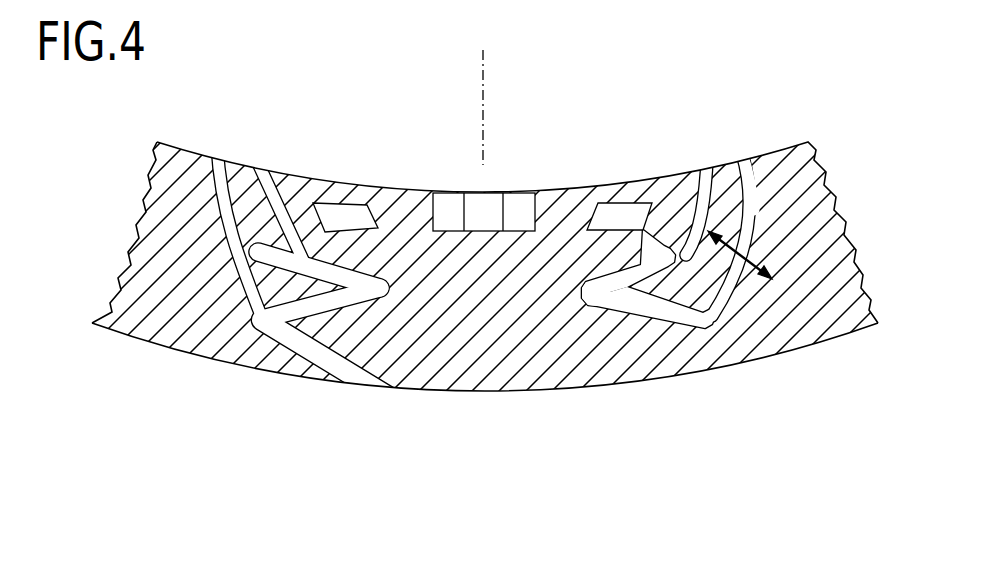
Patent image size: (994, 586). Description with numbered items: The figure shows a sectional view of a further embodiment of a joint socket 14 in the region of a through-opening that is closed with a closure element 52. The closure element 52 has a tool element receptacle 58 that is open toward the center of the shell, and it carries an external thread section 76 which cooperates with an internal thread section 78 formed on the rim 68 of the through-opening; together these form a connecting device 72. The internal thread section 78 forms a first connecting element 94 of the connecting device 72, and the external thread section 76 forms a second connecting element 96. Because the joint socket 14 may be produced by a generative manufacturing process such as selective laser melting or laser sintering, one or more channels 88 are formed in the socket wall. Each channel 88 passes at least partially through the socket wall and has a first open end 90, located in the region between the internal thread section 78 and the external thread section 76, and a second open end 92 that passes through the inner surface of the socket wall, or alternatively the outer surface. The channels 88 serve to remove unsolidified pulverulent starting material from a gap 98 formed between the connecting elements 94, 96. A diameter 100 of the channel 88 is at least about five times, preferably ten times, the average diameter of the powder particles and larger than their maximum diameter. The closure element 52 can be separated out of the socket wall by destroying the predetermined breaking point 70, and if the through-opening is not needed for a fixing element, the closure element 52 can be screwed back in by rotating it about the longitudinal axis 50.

The joint socket 14 is at (580, 90).
The longitudinal axis 50 is at (487, 72).
The closure element 52 is at (481, 368).
The tool element receptacle 58 is at (450, 207).
The rim 68 is at (300, 352).
The predetermined breaking point 70 is at (343, 192).
The connecting device 72 is at (625, 384).
The external thread section 76 is at (653, 330).
The internal thread section 78 is at (286, 308).
The channel 88 is at (216, 167).
The first open end 90 is at (702, 312).
The second open end 92 is at (750, 160).
The first connecting element 94 is at (330, 288).
The second connecting element 96 is at (313, 254).
The gap 98 is at (690, 253).
The diameter 100 is at (760, 249).